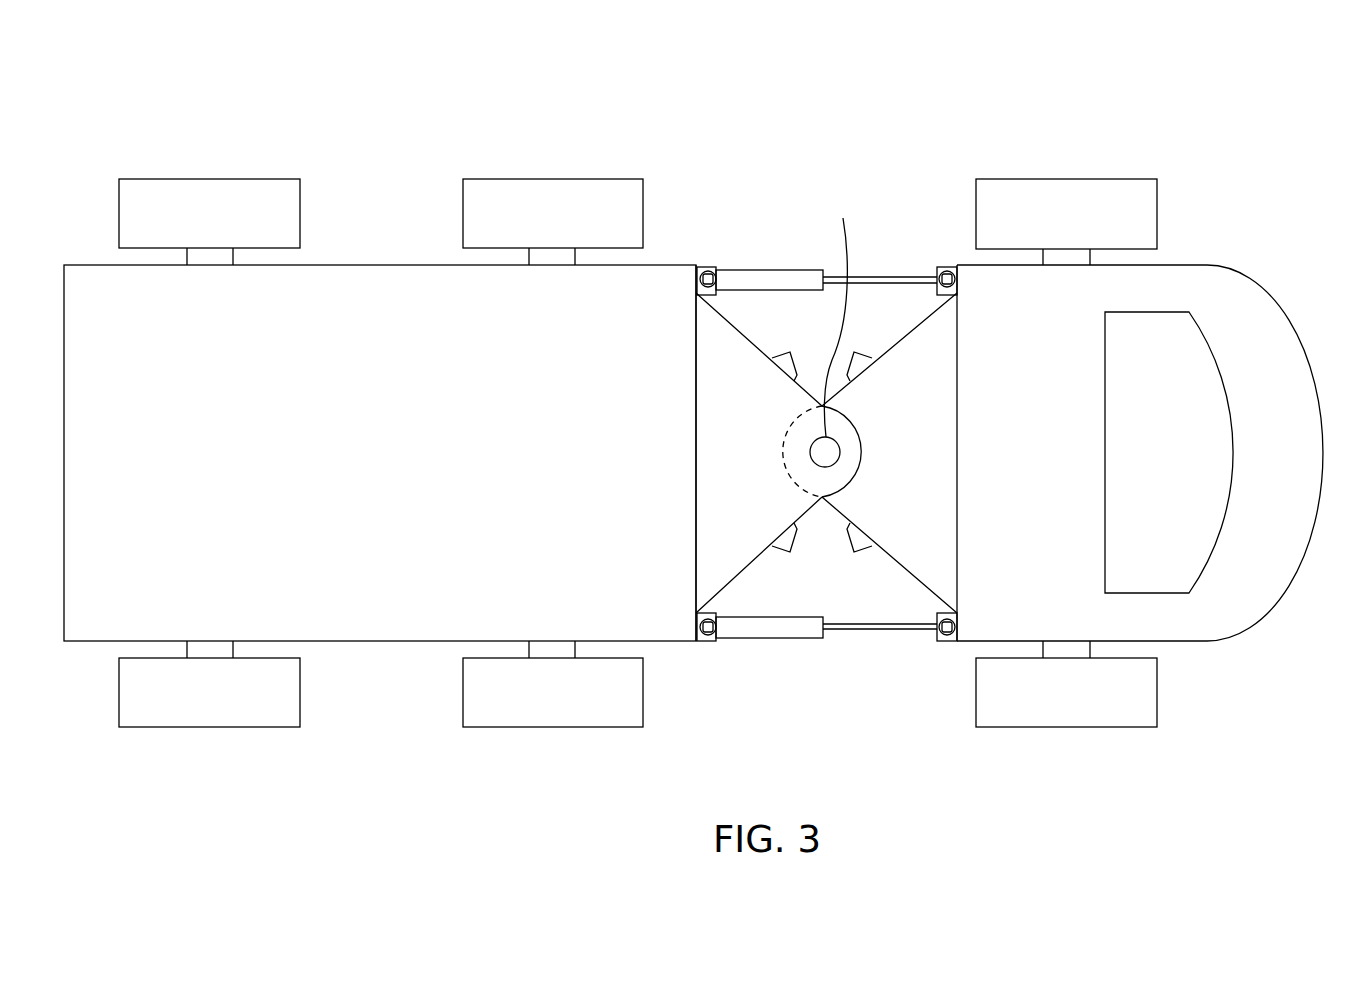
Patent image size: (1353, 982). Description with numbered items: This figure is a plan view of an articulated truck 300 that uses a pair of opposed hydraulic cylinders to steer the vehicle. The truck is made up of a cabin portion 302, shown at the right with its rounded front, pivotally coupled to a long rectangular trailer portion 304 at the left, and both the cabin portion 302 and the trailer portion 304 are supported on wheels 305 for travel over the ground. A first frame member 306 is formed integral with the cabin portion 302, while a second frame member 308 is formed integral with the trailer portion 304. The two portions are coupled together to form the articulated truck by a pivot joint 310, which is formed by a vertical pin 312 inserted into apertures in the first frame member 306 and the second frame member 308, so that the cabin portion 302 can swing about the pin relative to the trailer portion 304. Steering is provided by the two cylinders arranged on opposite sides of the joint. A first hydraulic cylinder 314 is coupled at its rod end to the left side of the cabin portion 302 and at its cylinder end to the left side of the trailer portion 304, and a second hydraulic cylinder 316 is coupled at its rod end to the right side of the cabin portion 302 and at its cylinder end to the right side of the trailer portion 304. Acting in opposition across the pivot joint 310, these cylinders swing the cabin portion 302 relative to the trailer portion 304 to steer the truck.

The articulated truck 300 is at (855, 77).
The cabin portion 302 is at (1232, 190).
The trailer portion 304 is at (392, 160).
The wheels 305 is at (208, 178).
The first frame member 306 is at (940, 469).
The second frame member 308 is at (760, 469).
The pivot joint 310 is at (825, 478).
The vertical pin 312 is at (841, 313).
The first hydraulic cylinder 314 is at (773, 267).
The second hydraulic cylinder 316 is at (757, 640).